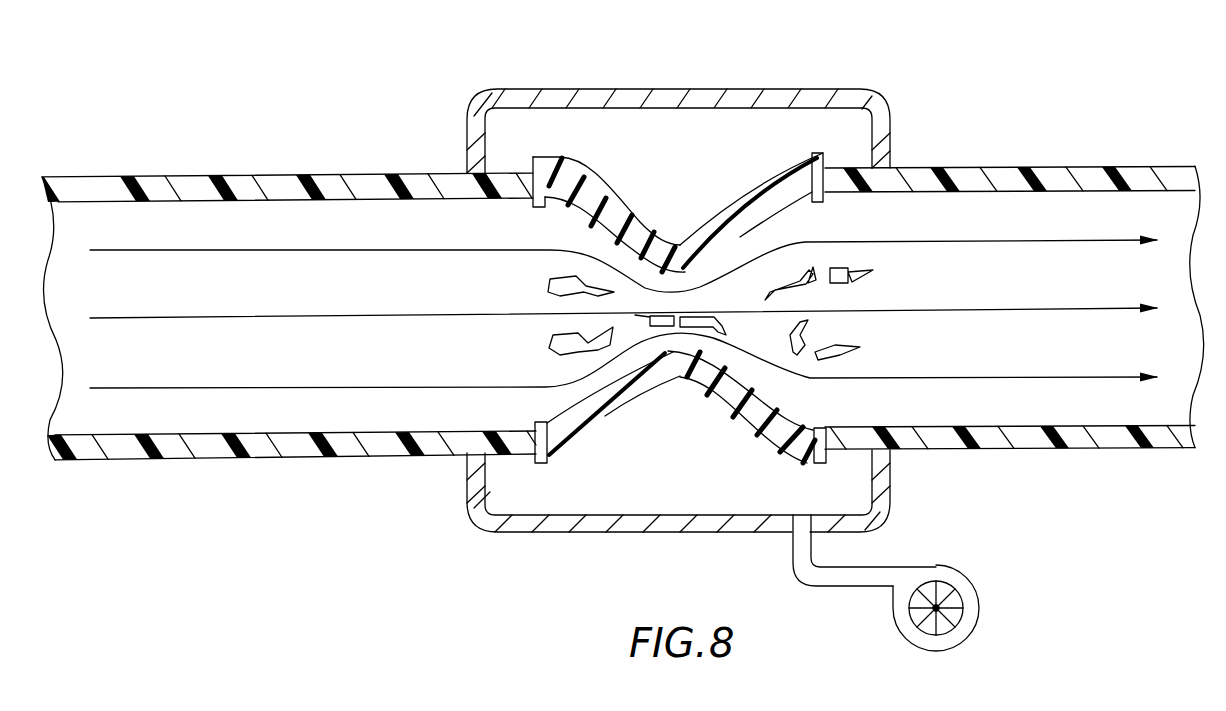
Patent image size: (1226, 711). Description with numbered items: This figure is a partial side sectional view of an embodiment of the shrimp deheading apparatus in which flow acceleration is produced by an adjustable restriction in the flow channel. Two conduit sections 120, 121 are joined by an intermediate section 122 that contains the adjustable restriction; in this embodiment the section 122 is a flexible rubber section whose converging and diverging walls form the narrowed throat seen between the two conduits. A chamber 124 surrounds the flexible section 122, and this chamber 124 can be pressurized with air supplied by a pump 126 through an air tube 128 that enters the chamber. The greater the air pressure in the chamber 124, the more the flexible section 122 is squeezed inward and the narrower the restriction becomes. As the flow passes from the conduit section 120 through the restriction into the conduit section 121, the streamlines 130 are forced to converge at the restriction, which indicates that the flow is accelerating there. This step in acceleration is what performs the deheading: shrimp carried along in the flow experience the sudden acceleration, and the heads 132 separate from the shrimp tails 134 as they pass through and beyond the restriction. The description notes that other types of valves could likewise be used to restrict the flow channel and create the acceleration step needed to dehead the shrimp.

The conduit section 120 is at (233, 176).
The conduit section 121 is at (1090, 442).
The flexible section 122 is at (724, 395).
The chamber 124 is at (830, 88).
The pump 126 is at (978, 605).
The air tube 128 is at (884, 567).
The streamlines 130 is at (306, 250).
The heads 132 is at (850, 278).
The shrimp tails 134 is at (805, 276).